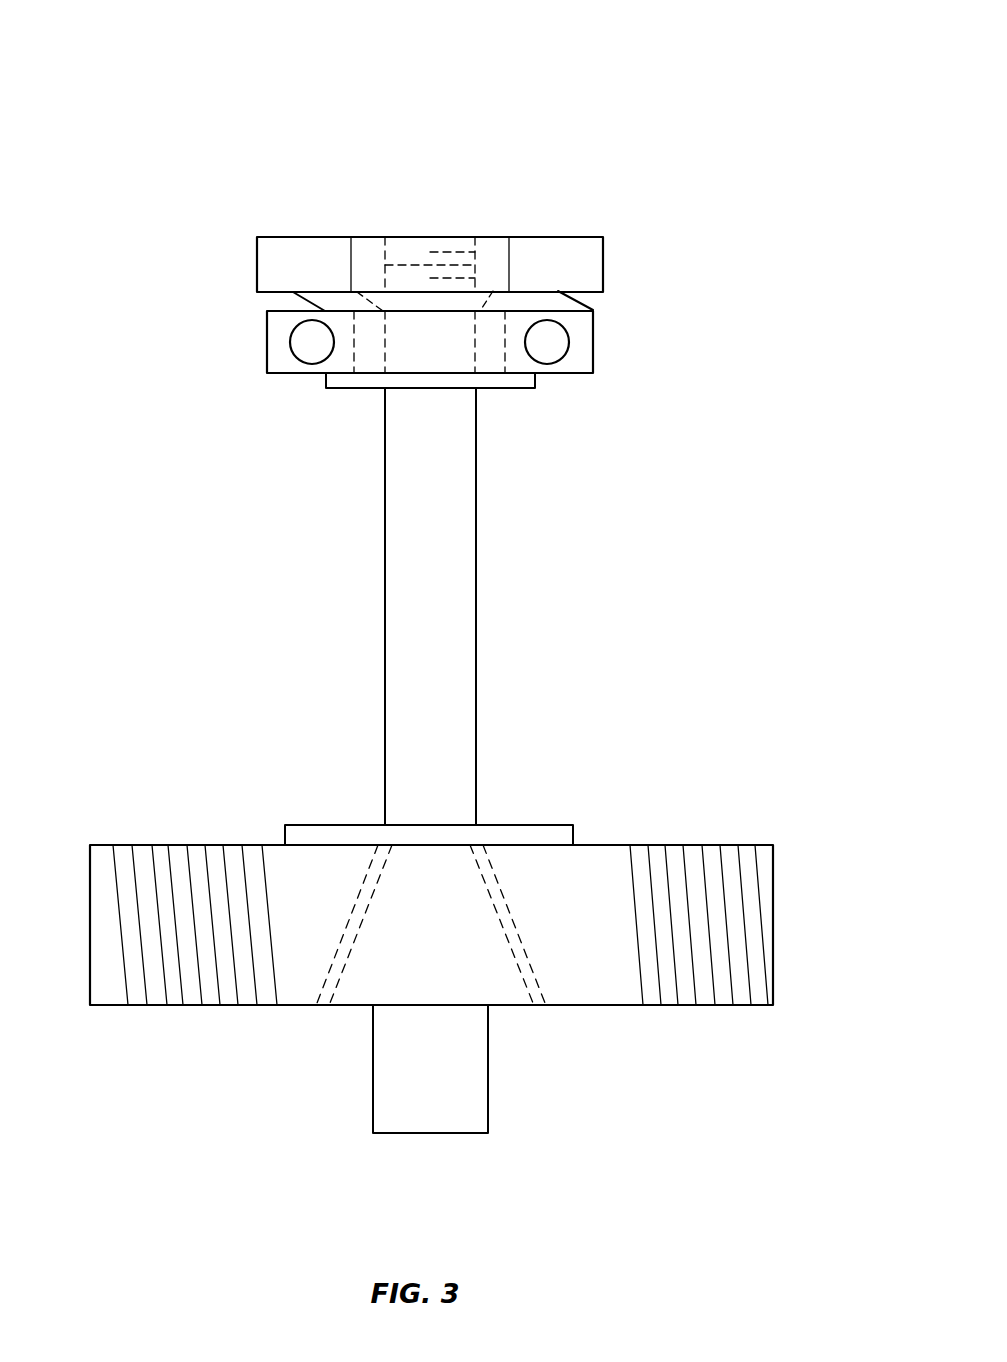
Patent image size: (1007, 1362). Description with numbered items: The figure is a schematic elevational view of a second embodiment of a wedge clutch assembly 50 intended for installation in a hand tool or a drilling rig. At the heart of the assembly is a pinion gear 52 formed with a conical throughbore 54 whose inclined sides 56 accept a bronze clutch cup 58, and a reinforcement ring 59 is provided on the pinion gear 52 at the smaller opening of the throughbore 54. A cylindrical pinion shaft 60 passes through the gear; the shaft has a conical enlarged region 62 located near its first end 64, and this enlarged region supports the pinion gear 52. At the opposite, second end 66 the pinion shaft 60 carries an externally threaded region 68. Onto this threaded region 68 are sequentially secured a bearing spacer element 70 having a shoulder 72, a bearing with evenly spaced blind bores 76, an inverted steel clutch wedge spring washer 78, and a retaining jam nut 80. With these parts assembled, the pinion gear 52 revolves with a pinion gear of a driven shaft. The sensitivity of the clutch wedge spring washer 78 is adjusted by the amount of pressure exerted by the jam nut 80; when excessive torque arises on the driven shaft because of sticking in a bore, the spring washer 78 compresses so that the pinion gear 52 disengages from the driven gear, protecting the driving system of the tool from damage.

The wedge clutch assembly 50 is at (196, 89).
The pinion gear 52 is at (605, 923).
The conical throughbore 54 is at (532, 957).
The inclined sides 56 is at (500, 910).
The bronze clutch cup 58 is at (328, 975).
The reinforcement ring 59 is at (355, 832).
The pinion shaft 60 is at (450, 607).
The conical enlarged region 62 is at (452, 940).
The first end 64 is at (425, 1132).
The second end 66 is at (432, 232).
The externally threaded region 68 is at (424, 266).
The bearing spacer element 70 is at (432, 340).
The shoulder 72 is at (369, 380).
The blind bores 76 is at (315, 340).
The clutch wedge spring washer 78 is at (534, 305).
The retaining jam nut 80 is at (302, 238).